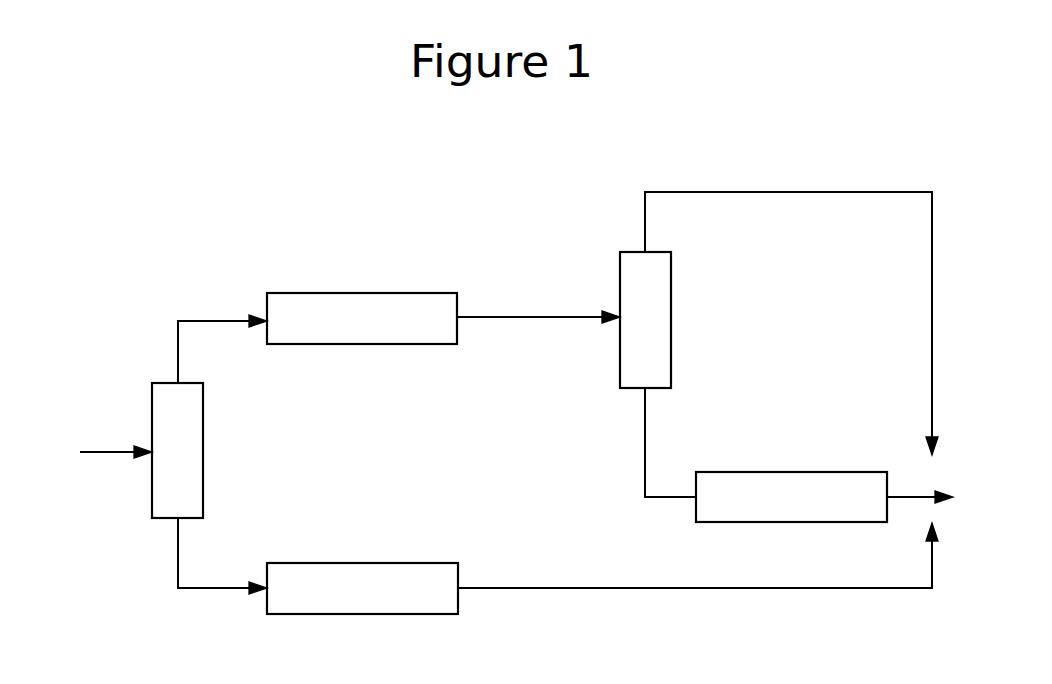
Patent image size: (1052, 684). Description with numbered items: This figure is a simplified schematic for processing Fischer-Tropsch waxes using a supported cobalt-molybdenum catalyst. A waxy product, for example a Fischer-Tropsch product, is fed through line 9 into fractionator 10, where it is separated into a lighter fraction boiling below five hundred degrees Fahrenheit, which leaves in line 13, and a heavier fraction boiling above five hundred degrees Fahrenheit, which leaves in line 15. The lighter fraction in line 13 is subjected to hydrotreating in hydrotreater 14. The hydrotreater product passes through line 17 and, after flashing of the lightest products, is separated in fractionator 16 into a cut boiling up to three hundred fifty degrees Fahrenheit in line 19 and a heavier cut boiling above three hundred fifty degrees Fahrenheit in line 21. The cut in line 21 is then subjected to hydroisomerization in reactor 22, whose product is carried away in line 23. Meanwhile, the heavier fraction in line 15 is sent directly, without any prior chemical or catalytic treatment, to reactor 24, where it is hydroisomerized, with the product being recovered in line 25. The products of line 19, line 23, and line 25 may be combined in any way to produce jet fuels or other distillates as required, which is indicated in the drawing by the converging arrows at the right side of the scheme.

The line 9 is at (103, 452).
The fractionator 10 is at (205, 423).
The line 13 is at (213, 320).
The hydrotreater 14 is at (322, 293).
The line 15 is at (205, 588).
The fractionator 16 is at (671, 305).
The line 17 is at (482, 317).
The line 19 is at (737, 192).
The line 21 is at (662, 497).
The reactor 22 is at (763, 472).
The line 23 is at (915, 497).
The reactor 24 is at (302, 563).
The line 25 is at (489, 588).